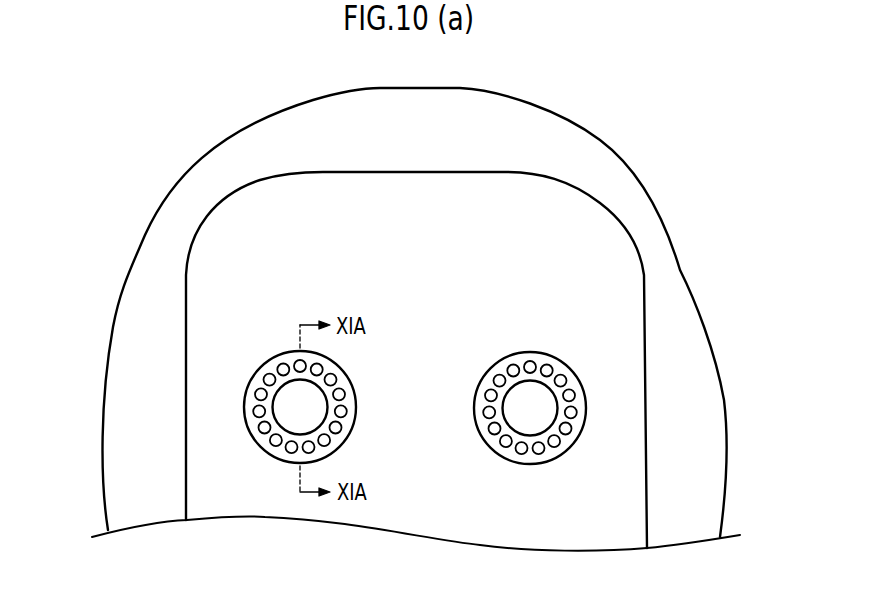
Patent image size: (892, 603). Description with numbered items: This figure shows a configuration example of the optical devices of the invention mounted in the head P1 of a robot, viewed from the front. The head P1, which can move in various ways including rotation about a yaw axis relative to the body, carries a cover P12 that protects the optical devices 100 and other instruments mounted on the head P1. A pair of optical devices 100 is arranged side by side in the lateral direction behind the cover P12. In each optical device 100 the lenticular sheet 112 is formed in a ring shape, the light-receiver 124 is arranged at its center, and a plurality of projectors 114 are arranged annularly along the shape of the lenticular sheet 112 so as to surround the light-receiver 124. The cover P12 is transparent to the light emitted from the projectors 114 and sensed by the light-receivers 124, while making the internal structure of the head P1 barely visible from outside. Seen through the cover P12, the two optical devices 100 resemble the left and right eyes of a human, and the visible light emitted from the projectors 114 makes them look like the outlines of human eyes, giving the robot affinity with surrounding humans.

The optical device 100 is at (413, 364).
The lenticular sheet 112 is at (356, 394).
The projector 114 is at (256, 390).
The light-receiver 124 is at (285, 420).
The head P1 is at (708, 141).
The cover P12 is at (620, 497).